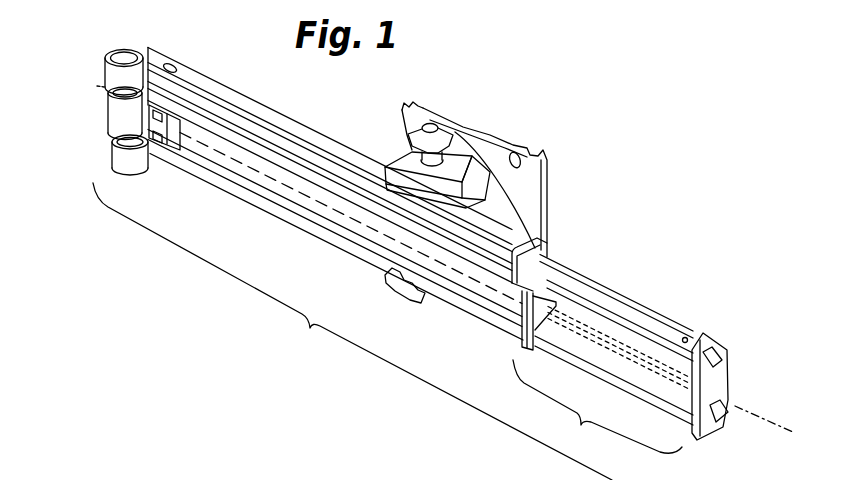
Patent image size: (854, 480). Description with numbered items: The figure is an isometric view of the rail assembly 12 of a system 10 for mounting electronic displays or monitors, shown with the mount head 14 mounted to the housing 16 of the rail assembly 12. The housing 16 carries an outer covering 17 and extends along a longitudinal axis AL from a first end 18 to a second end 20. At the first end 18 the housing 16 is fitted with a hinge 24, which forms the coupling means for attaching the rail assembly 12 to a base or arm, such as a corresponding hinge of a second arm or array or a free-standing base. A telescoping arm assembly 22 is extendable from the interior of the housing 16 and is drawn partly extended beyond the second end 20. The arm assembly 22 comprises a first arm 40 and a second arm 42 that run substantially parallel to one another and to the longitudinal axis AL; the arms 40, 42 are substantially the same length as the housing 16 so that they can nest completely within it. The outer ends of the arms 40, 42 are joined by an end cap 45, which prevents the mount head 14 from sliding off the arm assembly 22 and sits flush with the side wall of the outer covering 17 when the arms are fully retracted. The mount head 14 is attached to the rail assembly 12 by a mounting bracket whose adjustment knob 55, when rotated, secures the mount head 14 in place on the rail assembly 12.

The system 10 is at (627, 218).
The rail assembly 12 is at (352, 264).
The mount head 14 is at (553, 140).
The housing 16 is at (203, 77).
The outer covering 17 is at (170, 160).
The first end 18 is at (115, 47).
The second end 20 is at (557, 272).
The telescoping arm assembly 22 is at (597, 406).
The hinge 24 is at (110, 115).
The first arm 40 is at (651, 320).
The second arm 42 is at (583, 358).
The end cap 45 is at (720, 383).
The adjustment knob 55 is at (440, 128).
The longitudinal axis AL is at (80, 80).